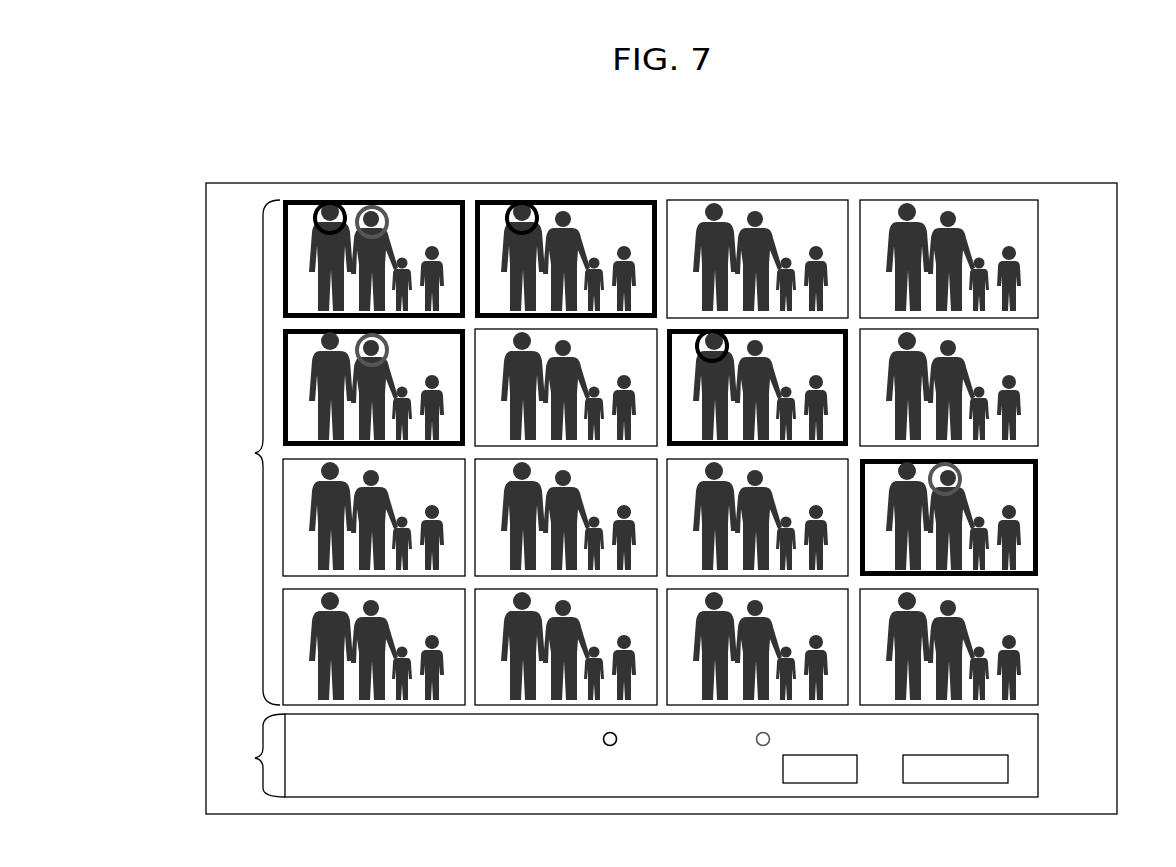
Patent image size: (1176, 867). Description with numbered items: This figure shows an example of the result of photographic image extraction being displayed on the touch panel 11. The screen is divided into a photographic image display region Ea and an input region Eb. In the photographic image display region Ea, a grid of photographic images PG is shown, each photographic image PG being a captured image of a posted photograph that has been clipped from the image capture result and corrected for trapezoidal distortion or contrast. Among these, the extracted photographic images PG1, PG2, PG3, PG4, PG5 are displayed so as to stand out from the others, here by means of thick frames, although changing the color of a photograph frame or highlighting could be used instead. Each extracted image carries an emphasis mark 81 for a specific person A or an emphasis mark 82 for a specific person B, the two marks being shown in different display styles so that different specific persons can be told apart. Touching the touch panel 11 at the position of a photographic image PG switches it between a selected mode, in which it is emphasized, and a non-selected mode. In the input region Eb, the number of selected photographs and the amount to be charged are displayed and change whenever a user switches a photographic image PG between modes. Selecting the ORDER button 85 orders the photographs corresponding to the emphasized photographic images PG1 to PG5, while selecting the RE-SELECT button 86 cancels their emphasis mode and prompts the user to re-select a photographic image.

The touch panel 11 is at (1117, 215).
The emphasis mark for specific person A 81 is at (345, 200).
The emphasis mark for specific person B 82 is at (386, 207).
The ORDER button 85 is at (820, 783).
The RE-SELECT button 86 is at (957, 783).
The photographic image PG is at (1038, 253).
The extracted photographic image PG1 is at (431, 200).
The extracted photographic image PG2 is at (622, 200).
The extracted photographic image PG3 is at (284, 390).
The extracted photographic image PG4 is at (812, 329).
The extracted photographic image PG5 is at (1038, 510).
The photographic image display region Ea is at (536, 452).
The input region Eb is at (631, 780).